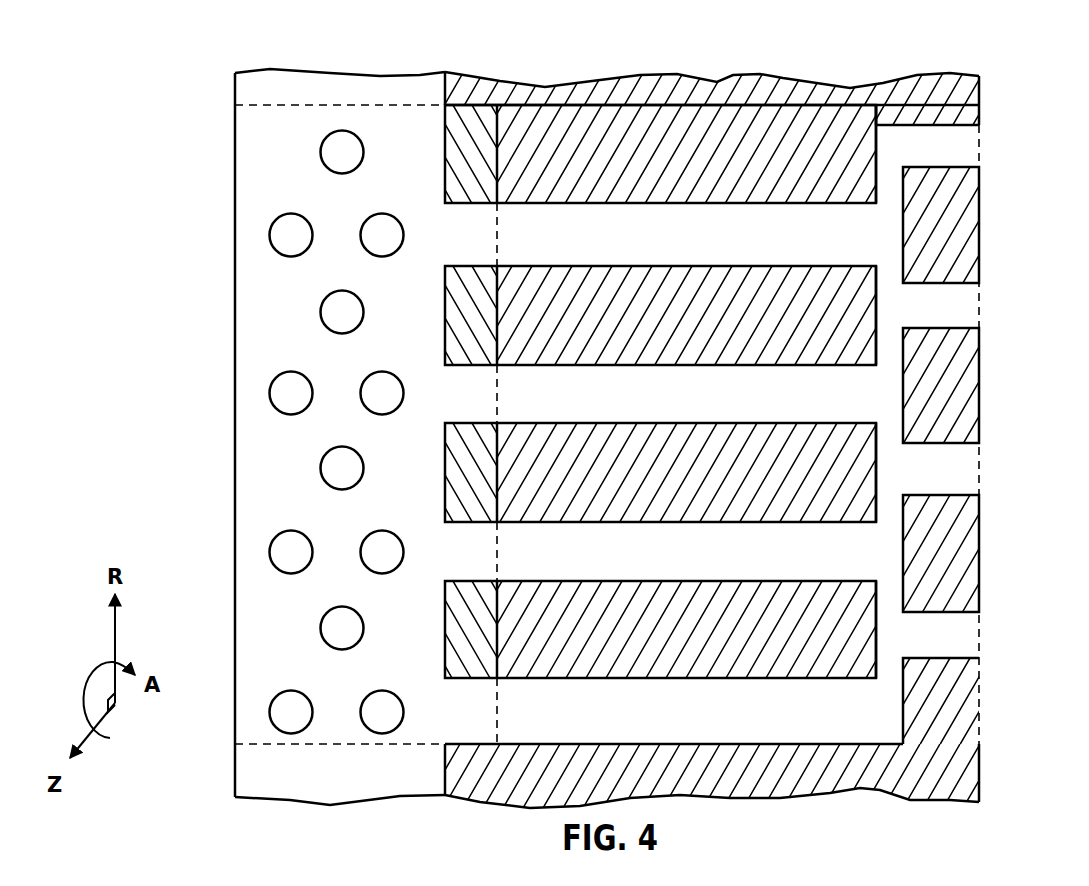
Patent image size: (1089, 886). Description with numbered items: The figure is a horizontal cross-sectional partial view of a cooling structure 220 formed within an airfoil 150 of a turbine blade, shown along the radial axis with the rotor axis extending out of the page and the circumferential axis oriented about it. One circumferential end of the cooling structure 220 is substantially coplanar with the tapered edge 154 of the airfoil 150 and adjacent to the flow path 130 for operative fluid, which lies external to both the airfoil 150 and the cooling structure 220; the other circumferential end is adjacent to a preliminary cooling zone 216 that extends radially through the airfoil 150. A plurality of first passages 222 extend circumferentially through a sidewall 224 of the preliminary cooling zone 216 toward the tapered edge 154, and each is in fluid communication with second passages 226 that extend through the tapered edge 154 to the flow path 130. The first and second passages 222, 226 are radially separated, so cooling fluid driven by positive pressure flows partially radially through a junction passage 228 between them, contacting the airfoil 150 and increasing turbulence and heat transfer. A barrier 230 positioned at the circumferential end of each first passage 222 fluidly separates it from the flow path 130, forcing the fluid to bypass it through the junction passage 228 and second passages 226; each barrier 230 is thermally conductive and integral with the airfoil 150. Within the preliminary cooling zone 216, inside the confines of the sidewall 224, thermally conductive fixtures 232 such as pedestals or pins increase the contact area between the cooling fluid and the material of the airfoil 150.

The flow path 130 is at (1042, 417).
The airfoil 150 is at (554, 104).
The tapered edge 154 is at (980, 108).
The preliminary cooling zone 216 is at (360, 215).
The cooling structure 220 is at (792, 66).
The first passages 222 is at (708, 247).
The sidewall 224 is at (478, 175).
The second passages 226 is at (958, 144).
The junction passage 228 is at (886, 200).
The barrier 230 is at (980, 222).
The thermally conductive fixtures 232 is at (282, 228).